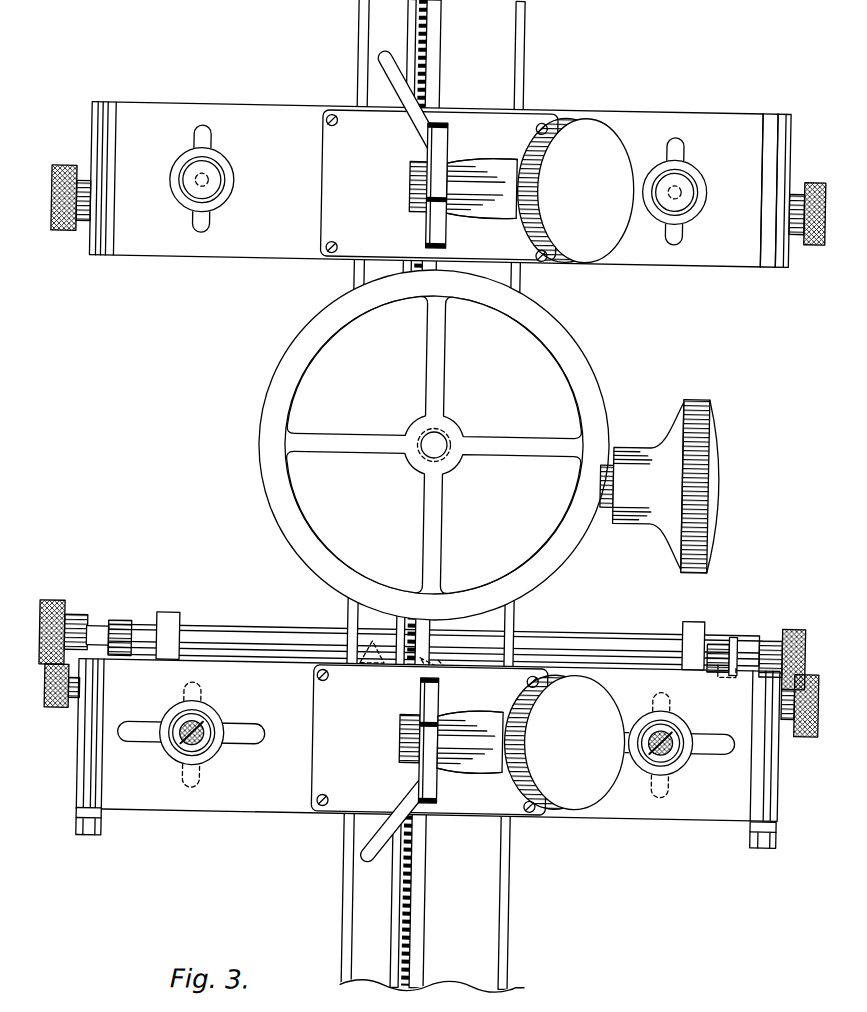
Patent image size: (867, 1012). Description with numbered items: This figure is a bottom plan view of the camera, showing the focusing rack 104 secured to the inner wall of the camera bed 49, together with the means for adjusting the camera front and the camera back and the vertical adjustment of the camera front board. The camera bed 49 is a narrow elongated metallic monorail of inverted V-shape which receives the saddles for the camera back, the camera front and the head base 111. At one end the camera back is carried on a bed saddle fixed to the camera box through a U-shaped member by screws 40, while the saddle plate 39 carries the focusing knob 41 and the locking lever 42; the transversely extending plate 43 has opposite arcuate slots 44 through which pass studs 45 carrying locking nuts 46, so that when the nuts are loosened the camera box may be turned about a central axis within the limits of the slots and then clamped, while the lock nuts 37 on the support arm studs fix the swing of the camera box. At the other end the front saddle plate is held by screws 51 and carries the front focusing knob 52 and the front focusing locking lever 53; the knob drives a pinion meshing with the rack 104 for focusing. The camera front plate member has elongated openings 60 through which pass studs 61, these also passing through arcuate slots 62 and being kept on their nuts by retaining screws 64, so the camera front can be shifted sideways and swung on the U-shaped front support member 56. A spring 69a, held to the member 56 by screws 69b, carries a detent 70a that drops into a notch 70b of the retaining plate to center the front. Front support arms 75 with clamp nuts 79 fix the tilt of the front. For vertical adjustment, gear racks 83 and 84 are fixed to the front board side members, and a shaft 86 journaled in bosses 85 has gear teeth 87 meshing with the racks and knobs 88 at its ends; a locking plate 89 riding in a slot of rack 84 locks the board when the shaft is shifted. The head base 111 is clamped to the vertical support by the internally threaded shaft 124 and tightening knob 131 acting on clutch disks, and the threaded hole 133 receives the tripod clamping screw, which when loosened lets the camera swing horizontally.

The lock nut 37 is at (60, 237).
The saddle plate 39 is at (524, 118).
The screws 40 is at (332, 122).
The focusing knob 41 is at (594, 244).
The locking lever 42 is at (416, 137).
The transversely extending plate 43 is at (764, 119).
The arcuate slots 44 is at (207, 144).
The studs 45 is at (200, 184).
The locking nuts 46 is at (218, 204).
The camera bed 49 is at (500, 37).
The screws 51 is at (328, 680).
The front focusing knob 52 is at (587, 803).
The front focusing locking lever 53 is at (380, 861).
The U-shaped front support member 56 is at (96, 784).
The elongated openings 60 is at (263, 743).
The studs 61 is at (216, 756).
The arcuate slots 62 is at (191, 786).
The retaining screws 64 is at (198, 739).
The second spring 69a is at (424, 658).
The screws 69b is at (376, 661).
The detent formation 70a is at (442, 660).
The notch 70b is at (444, 668).
The front support arm 75 is at (104, 826).
The clamp nuts 79 is at (60, 717).
The gear rack 83 is at (121, 661).
The gear rack 84 is at (728, 660).
The bearing members or bosses 85 is at (173, 618).
The shaft 86 is at (261, 631).
The gear teeth 87 is at (121, 628).
The knobs 88 is at (56, 610).
The locking plate 89 is at (740, 626).
The rack 104 is at (412, 22).
The head base 111 is at (570, 350).
The internally threaded shaft 124 is at (608, 502).
The tightening knob 131 is at (718, 450).
The threaded hole 133 is at (437, 443).